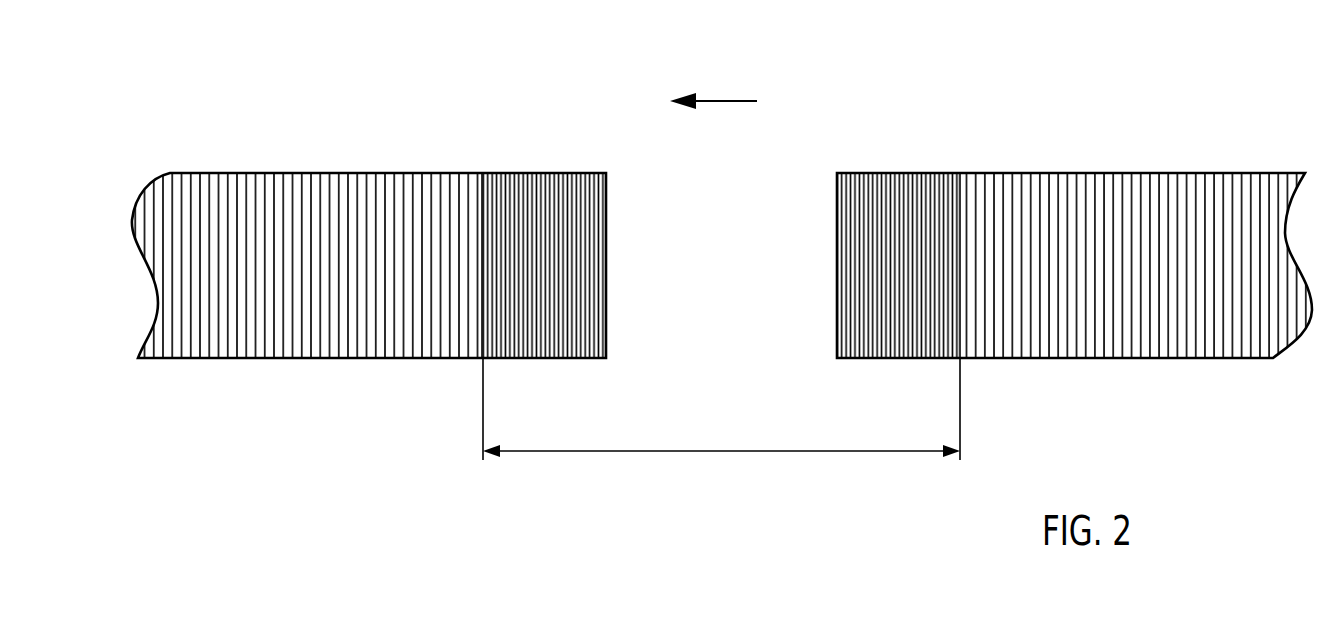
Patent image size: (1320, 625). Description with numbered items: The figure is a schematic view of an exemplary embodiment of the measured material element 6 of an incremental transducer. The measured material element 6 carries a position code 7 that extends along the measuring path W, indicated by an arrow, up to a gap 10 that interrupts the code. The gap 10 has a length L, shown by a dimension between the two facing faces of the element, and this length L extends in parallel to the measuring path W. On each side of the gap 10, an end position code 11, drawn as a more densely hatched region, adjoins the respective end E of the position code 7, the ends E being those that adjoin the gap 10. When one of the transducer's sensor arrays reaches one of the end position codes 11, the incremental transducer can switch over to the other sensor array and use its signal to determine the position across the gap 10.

The measured material element 6 is at (336, 79).
The position code 7 is at (721, 271).
The gap 10 is at (721, 251).
The end position code 11 is at (508, 173).
The end of the position code E is at (496, 239).
The measuring path W is at (721, 98).
The length of the gap L is at (721, 438).